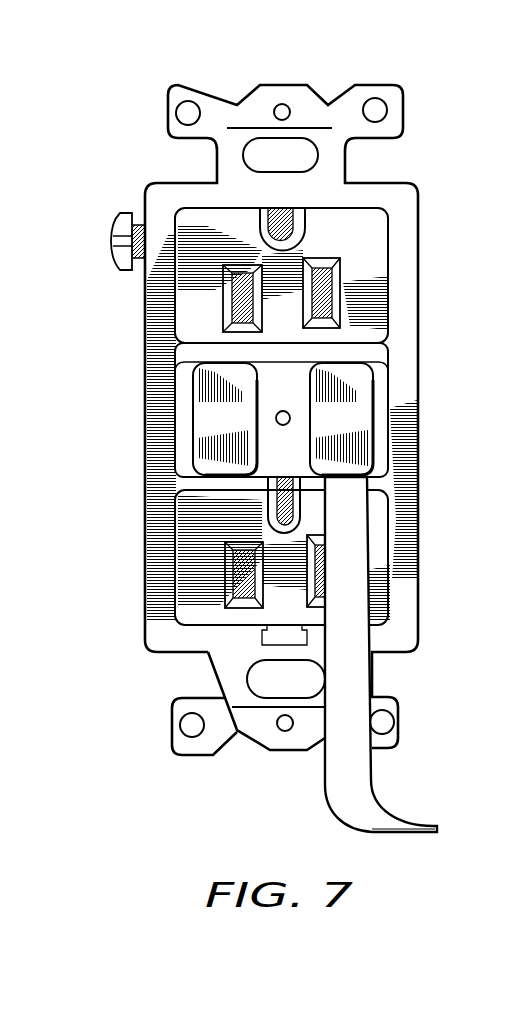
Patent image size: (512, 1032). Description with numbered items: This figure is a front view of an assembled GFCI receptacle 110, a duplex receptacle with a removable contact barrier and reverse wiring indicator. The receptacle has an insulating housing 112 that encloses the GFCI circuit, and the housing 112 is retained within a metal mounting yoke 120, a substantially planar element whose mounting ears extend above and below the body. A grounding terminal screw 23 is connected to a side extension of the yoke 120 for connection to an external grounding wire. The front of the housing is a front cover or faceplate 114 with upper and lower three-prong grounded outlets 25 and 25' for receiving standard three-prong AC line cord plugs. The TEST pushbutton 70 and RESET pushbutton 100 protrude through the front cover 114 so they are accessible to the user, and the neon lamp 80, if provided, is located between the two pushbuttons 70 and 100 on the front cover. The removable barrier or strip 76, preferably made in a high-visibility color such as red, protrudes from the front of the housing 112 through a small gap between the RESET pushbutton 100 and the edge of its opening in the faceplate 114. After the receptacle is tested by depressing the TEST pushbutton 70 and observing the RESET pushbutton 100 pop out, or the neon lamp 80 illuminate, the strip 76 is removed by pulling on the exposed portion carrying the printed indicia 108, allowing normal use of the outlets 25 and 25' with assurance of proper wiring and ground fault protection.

The GFCI receptacle 110 is at (274, 441).
The metal mounting yoke 120 is at (408, 191).
The front cover 114 is at (366, 274).
The insulating housing 112 is at (182, 315).
The grounding terminal screw 23 is at (118, 215).
The upper three-prong grounded outlet 25 is at (282, 274).
The lower three-prong grounded outlet 25' is at (281, 550).
The TEST pushbutton 70 is at (198, 438).
The RESET pushbutton 100 is at (363, 386).
The neon lamp 80 is at (283, 425).
The printed indicia 108 is at (366, 614).
The removable barrier strip 76 is at (373, 681).